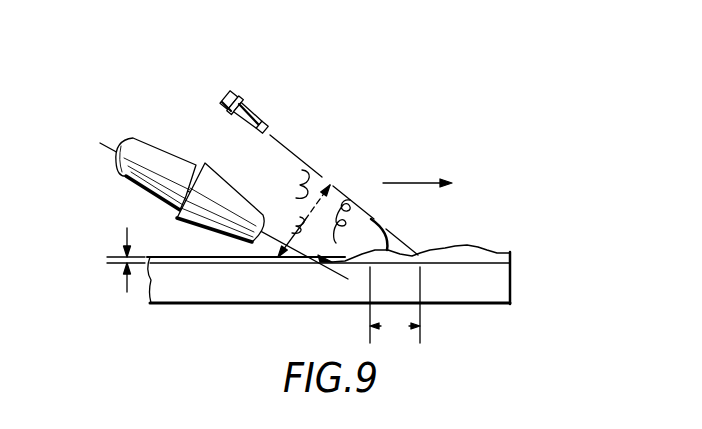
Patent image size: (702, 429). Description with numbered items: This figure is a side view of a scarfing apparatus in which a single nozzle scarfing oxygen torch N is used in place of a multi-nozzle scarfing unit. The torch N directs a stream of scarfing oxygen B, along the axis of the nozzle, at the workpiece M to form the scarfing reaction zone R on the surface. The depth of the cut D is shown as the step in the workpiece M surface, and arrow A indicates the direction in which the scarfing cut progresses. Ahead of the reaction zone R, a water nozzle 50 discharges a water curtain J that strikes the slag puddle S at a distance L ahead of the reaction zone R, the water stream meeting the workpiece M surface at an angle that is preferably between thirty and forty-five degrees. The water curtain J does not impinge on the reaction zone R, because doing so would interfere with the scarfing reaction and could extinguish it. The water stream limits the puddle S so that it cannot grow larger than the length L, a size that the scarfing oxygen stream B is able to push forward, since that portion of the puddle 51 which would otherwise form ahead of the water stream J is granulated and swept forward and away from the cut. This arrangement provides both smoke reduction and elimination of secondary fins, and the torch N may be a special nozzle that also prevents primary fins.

The water nozzle 50 is at (258, 113).
The puddle 51 is at (456, 245).
The single nozzle scarfing oxygen torch N is at (163, 155).
The water curtain J is at (305, 163).
The fluid F is at (297, 175).
The direction of scarfing cut A is at (418, 182).
The stream of scarfing oxygen B is at (270, 231).
The scarfing reaction zone R is at (319, 257).
The slag puddle S is at (355, 247).
The workpiece M is at (498, 279).
The depth of the cut D is at (126, 276).
The distance L is at (395, 306).